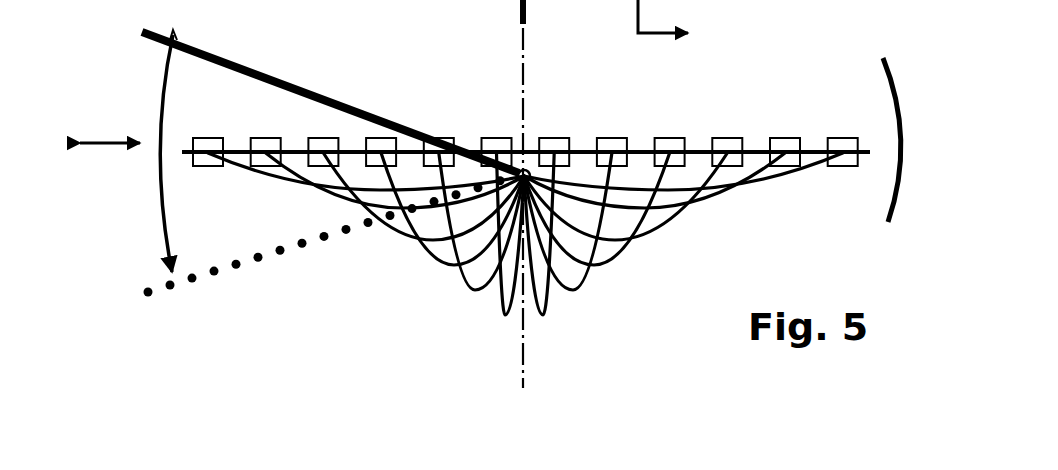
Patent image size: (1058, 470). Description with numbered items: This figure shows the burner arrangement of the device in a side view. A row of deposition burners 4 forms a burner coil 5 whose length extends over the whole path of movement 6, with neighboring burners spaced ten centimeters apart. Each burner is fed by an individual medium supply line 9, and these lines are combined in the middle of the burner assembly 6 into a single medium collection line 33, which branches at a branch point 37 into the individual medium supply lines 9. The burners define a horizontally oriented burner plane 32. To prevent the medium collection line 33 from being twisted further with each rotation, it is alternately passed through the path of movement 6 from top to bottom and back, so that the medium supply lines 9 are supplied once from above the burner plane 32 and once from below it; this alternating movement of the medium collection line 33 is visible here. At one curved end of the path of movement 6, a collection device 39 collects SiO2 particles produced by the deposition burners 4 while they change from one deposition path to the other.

The deposition burner 4 is at (599, 138).
The burner coil 5 is at (630, 124).
The path of movement 6 is at (697, 126).
The medium supply line 9 is at (490, 298).
The burner plane 32 is at (109, 142).
The medium collection line 33 is at (340, 101).
The branch point 37 is at (518, 162).
The collection device 39 is at (882, 197).